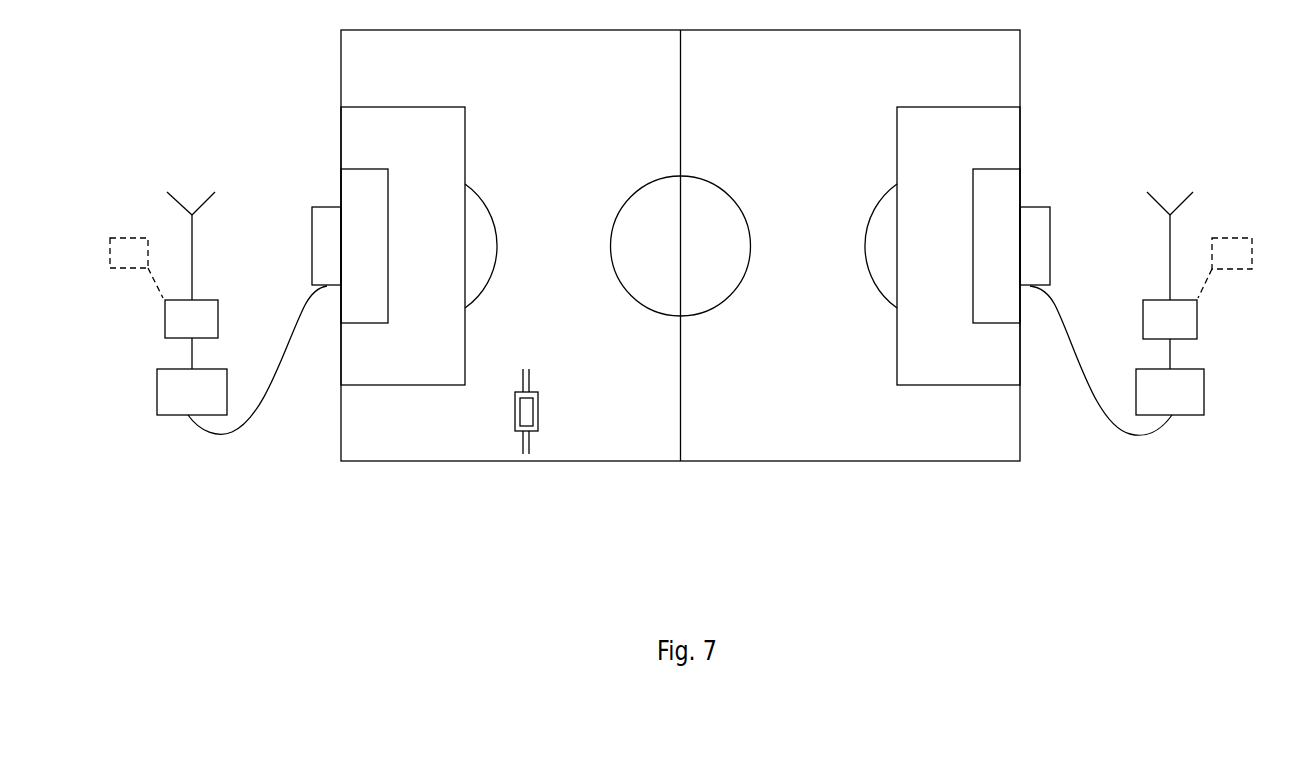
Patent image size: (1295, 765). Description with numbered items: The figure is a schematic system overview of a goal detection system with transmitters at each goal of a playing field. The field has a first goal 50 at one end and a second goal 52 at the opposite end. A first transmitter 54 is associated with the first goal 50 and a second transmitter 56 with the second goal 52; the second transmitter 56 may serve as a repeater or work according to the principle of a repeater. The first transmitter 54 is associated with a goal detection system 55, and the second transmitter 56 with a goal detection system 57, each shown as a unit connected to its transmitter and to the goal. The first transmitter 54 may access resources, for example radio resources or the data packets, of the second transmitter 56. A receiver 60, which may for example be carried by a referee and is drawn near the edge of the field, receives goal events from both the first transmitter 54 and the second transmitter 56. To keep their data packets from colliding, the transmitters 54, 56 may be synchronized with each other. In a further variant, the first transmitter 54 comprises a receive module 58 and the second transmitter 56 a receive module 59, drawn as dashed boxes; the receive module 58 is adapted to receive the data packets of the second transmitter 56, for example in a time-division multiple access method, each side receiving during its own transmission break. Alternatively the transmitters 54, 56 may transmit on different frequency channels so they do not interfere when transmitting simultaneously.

The first goal 50 is at (310, 218).
The second goal 52 is at (1052, 214).
The first transmitter 54 is at (165, 322).
The goal detection system 55 is at (162, 390).
The second transmitter 56 is at (1197, 322).
The goal detection system 57 is at (1198, 390).
The receive module 58 is at (120, 236).
The receive module 59 is at (1247, 237).
The receiver 60 is at (515, 436).